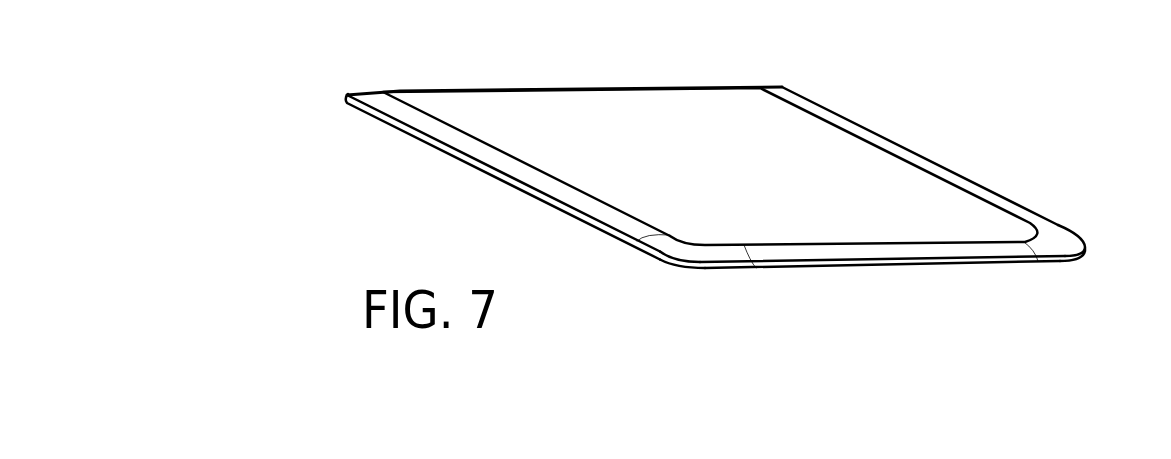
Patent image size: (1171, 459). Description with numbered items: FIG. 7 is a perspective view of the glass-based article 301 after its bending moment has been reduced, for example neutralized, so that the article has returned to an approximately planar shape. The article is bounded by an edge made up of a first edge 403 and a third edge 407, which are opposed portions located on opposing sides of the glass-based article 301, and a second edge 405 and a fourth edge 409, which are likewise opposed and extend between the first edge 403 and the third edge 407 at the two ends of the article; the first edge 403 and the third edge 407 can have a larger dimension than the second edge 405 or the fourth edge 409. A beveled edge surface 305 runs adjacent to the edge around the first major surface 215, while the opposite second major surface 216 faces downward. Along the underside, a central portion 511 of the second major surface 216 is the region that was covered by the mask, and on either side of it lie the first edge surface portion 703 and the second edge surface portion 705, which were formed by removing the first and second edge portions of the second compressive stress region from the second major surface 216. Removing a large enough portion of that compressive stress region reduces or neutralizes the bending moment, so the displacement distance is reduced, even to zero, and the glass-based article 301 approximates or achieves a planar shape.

The glass-based article 301 is at (1040, 110).
The beveled edge surface 305 is at (886, 140).
The second edge 405 is at (503, 87).
The first edge 403 is at (415, 137).
The third edge 407 is at (994, 190).
The fourth edge 409 is at (930, 265).
The central portion 511 is at (829, 272).
The first edge surface portion 703 is at (694, 272).
The second edge surface portion 705 is at (1065, 270).
The first major surface 215 is at (640, 150).
The second major surface 216 is at (791, 272).